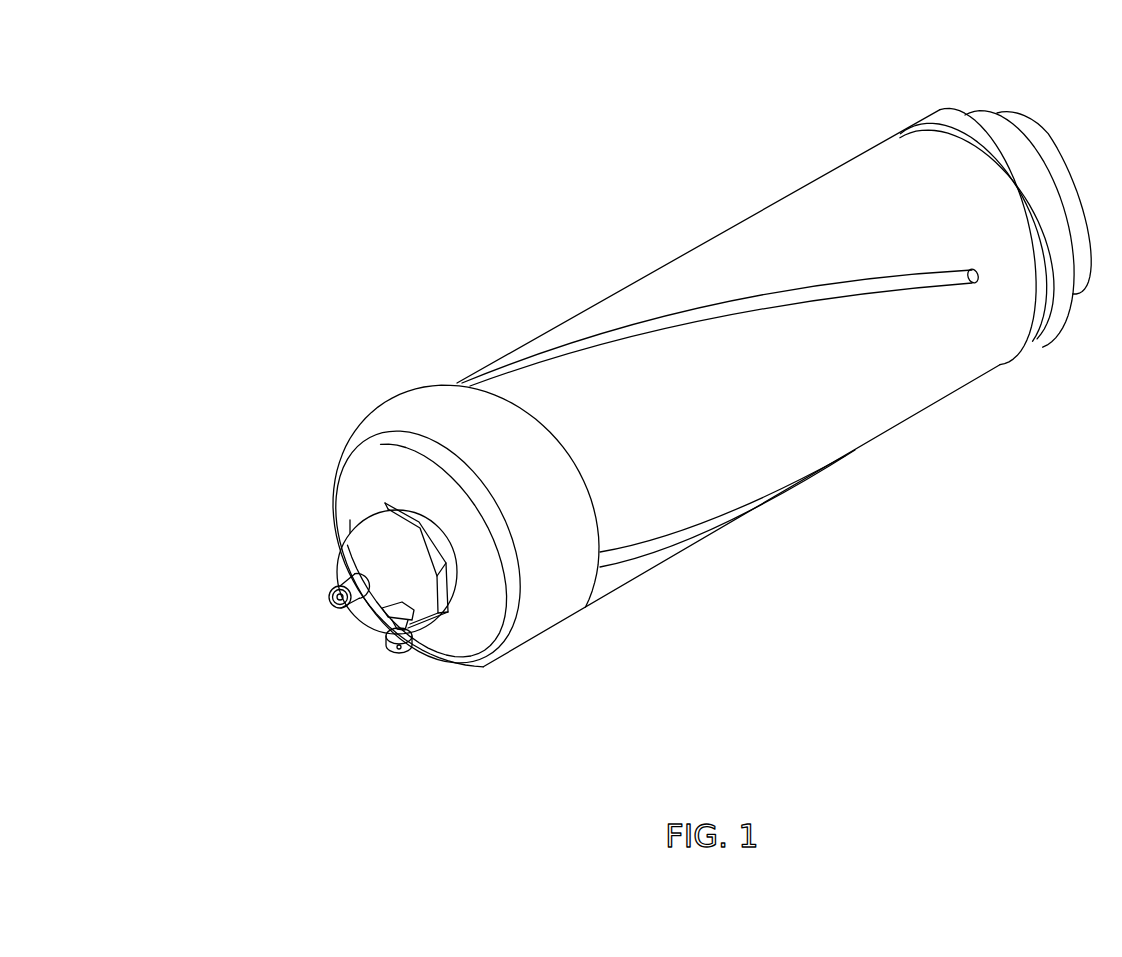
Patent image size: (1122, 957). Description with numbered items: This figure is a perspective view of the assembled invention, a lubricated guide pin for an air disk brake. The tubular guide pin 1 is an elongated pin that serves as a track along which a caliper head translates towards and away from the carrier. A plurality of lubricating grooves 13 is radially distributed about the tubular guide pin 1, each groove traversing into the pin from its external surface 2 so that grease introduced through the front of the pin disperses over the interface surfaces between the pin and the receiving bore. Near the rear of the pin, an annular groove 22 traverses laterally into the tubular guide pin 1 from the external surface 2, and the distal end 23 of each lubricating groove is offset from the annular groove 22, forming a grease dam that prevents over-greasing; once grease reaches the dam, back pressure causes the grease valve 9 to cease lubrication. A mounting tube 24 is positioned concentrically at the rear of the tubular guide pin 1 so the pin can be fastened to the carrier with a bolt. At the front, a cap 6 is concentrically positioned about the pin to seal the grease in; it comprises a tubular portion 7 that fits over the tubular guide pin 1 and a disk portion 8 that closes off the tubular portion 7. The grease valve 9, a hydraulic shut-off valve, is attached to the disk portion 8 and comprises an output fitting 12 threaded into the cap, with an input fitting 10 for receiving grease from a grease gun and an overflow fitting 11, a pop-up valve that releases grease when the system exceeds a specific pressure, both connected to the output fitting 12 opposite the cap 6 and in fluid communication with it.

The tubular guide pin 1 is at (718, 178).
The external surface 2 is at (843, 203).
The cap 6 is at (322, 404).
The tubular portion 7 is at (428, 410).
The disk portion 8 is at (345, 512).
The grease valve 9 is at (288, 630).
The input fitting 10 is at (399, 655).
The overflow fitting 11 is at (330, 597).
The output fitting 12 is at (455, 585).
The lubricating grooves 13 is at (758, 300).
The annular groove 22 is at (940, 135).
The distal end 23 is at (978, 282).
The mounting tube 24 is at (1065, 178).